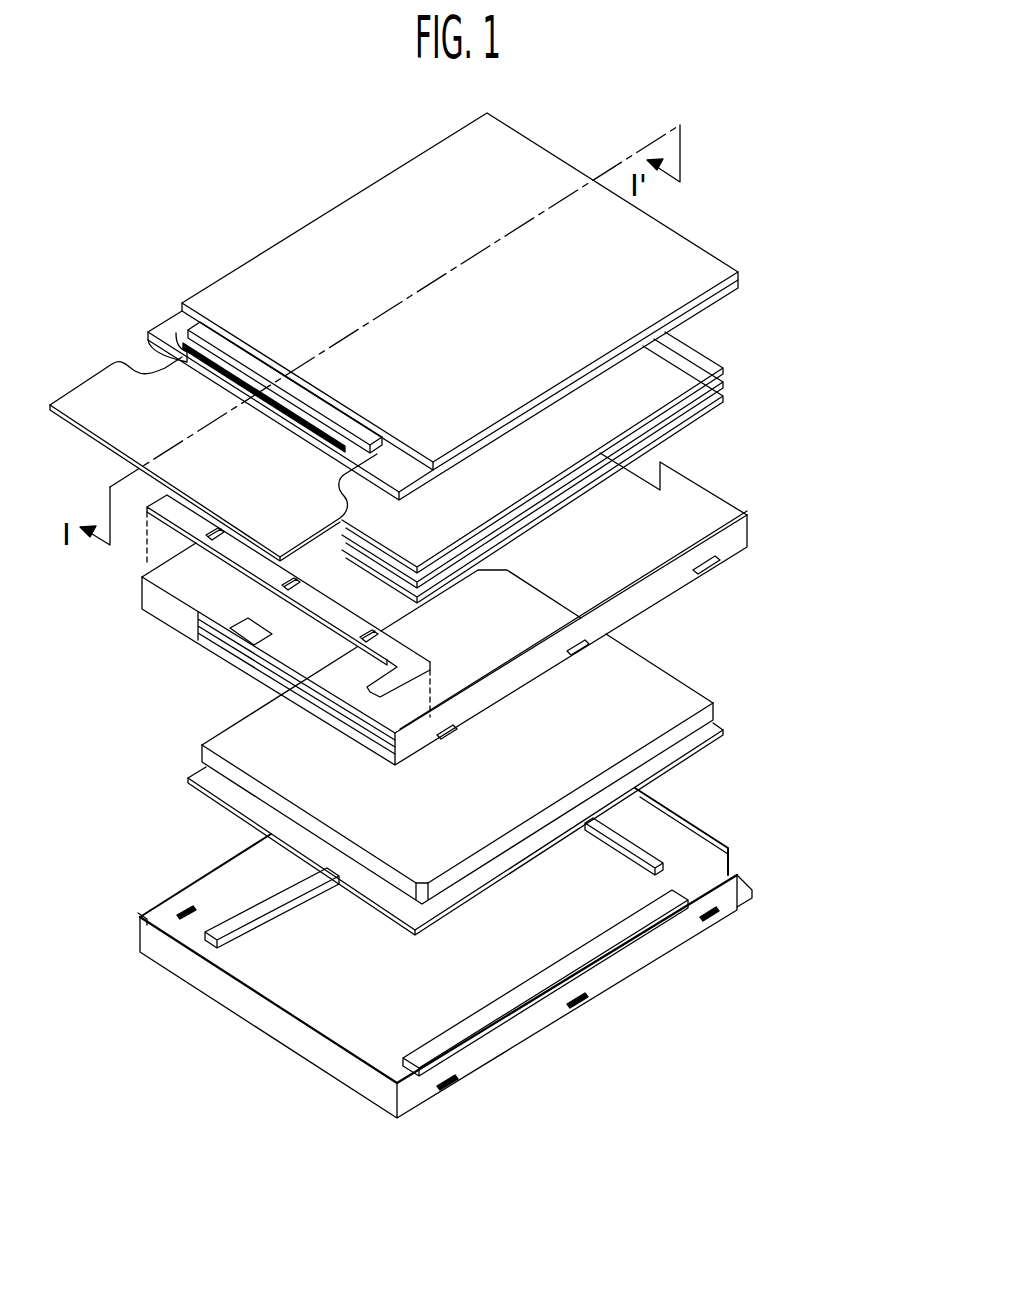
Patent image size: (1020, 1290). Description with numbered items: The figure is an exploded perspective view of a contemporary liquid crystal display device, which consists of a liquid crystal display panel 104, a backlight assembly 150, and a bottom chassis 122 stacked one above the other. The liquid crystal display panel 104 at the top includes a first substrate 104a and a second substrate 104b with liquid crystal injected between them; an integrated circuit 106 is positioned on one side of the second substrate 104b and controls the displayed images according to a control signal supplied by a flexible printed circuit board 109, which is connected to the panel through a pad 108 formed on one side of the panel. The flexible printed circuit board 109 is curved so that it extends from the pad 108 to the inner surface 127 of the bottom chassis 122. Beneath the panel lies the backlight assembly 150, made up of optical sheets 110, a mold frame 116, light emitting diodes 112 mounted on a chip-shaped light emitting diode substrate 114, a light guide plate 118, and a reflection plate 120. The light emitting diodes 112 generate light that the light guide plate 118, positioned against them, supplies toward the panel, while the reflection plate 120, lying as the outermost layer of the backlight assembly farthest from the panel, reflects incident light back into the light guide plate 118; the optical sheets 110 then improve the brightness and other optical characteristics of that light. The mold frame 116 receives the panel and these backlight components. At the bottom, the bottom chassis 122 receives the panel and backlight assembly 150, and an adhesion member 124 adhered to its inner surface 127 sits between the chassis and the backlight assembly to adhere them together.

The liquid crystal display panel 104 is at (508, 306).
The first substrate 104a is at (738, 273).
The second substrate 104b is at (740, 287).
The integrated circuit 106 is at (200, 333).
The pad 108 is at (157, 329).
The flexible printed circuit board 109 is at (98, 417).
The optical sheets 110 is at (733, 370).
The light emitting diodes 112 is at (361, 636).
The light emitting diode substrate 114 is at (380, 683).
The mold frame 116 is at (708, 483).
The light guide plate 118 is at (213, 734).
The reflection plate 120 is at (197, 769).
The bottom chassis 122 is at (474, 970).
The adhesion member 124 is at (602, 943).
The inner surface 127 is at (342, 987).
The backlight assembly 150 is at (783, 372).